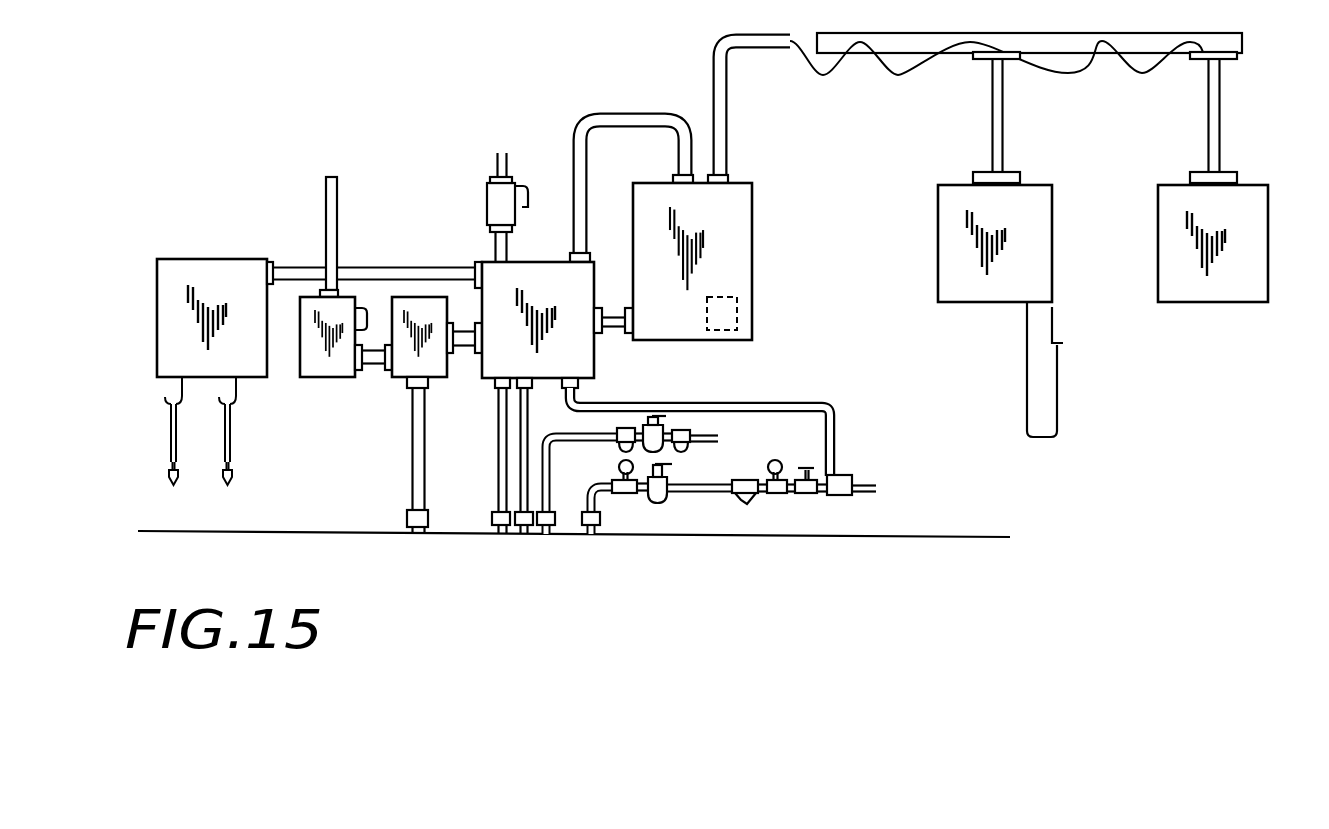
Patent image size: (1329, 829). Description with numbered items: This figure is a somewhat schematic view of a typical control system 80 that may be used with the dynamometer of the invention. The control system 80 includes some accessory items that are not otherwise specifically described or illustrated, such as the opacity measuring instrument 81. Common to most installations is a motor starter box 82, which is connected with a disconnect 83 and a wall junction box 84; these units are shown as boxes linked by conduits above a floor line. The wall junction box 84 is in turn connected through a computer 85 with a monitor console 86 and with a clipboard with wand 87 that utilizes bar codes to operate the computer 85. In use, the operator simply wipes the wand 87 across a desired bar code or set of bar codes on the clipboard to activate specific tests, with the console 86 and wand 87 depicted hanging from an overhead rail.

The control system 80 is at (656, 547).
The opacity measuring instrument 81 is at (203, 267).
The motor starter box 82 is at (427, 300).
The disconnect 83 is at (333, 378).
The wall junction box 84 is at (543, 268).
The computer 85 is at (735, 219).
The monitor console 86 is at (1035, 213).
The clipboard with wand 87 is at (1054, 327).